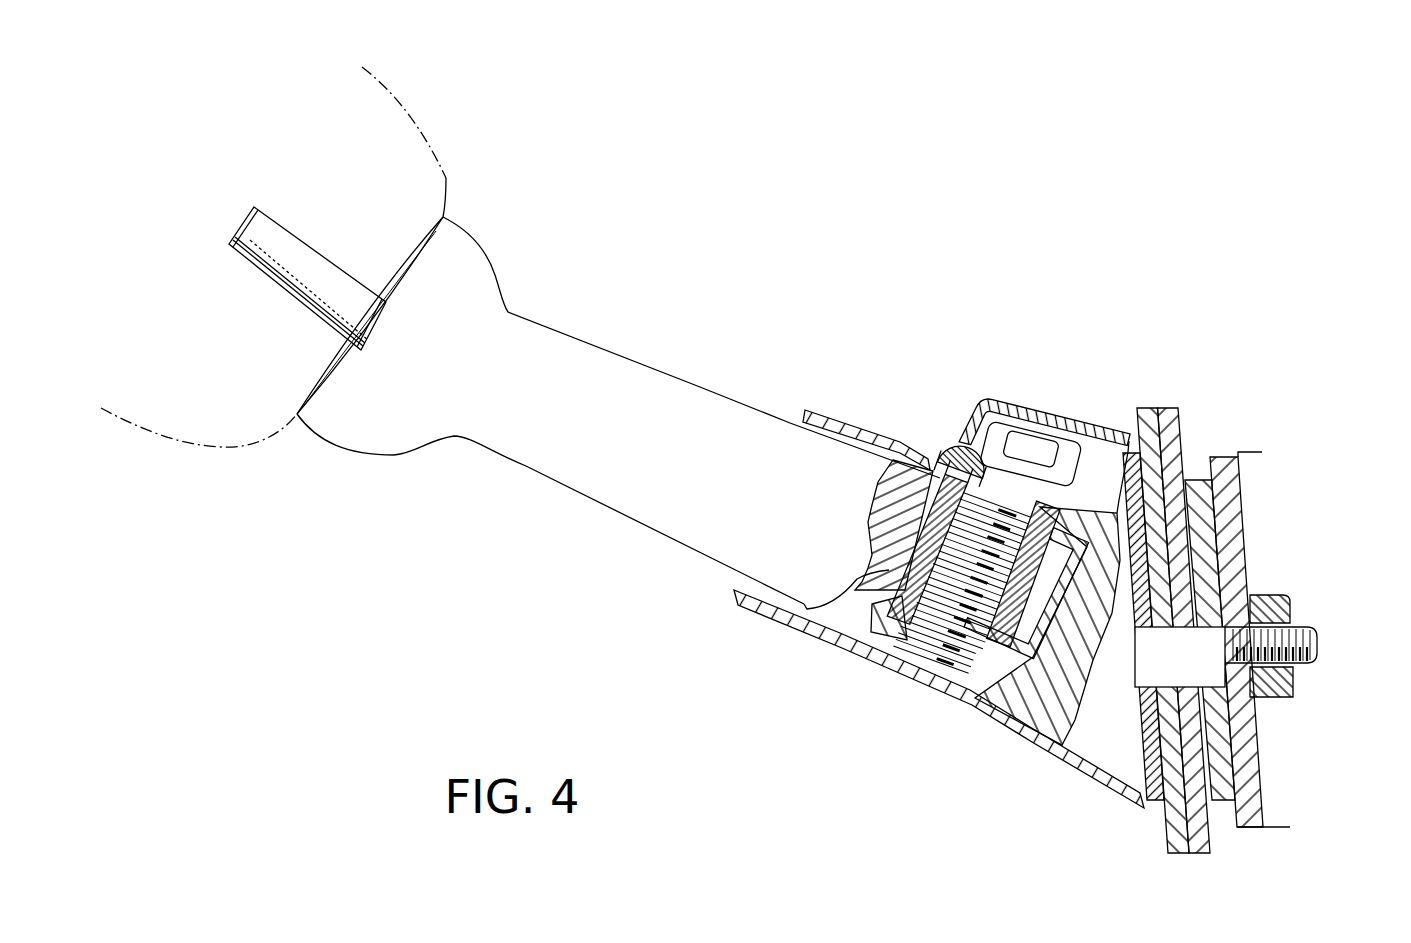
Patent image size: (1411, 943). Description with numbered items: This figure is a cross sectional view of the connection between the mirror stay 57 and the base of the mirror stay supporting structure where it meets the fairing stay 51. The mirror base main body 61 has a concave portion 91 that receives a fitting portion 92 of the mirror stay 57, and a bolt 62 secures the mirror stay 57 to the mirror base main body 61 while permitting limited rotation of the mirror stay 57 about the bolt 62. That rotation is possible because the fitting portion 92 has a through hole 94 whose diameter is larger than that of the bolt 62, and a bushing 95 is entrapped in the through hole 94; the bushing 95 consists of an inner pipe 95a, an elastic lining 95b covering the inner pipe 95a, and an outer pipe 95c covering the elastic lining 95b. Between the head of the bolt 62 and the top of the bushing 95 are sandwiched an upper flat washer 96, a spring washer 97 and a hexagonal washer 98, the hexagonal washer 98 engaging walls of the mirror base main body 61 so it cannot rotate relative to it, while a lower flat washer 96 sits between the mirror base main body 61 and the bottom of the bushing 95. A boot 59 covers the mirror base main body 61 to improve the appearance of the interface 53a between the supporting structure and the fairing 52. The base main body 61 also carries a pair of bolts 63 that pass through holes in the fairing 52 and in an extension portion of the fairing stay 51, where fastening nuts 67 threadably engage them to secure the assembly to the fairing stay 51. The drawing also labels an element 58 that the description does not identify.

The fairing stay 51 is at (1260, 452).
The fairing 52 is at (1150, 410).
The interface 53a is at (1153, 763).
The mirror stay 57 is at (637, 361).
The knob 58 is at (441, 121).
The boot 59 is at (829, 418).
The mirror base main body 61 is at (1108, 740).
The first bolt 62 is at (1047, 432).
The bolts 63 is at (1320, 637).
The fastening nuts 67 is at (1270, 594).
The concave portion 91 is at (1015, 680).
The fitting portion 92 is at (930, 458).
The through hole 94 is at (1017, 677).
The bushing 95 is at (902, 507).
The inner pipe 95a is at (875, 633).
The elastic lining 95b is at (864, 608).
The outer pipe 95c is at (915, 530).
The flat washer 96 is at (965, 448).
The spring washer 97 is at (1112, 442).
The hexagonal washer 98 is at (978, 455).